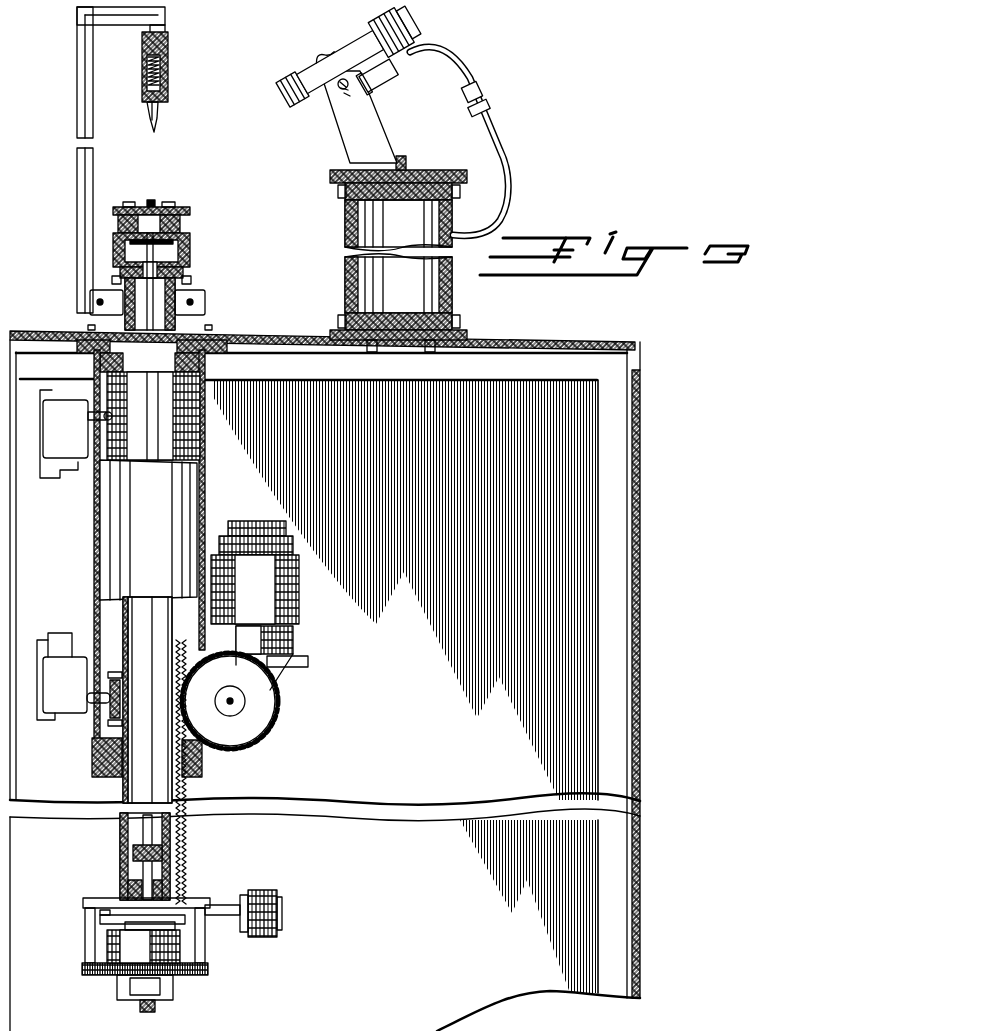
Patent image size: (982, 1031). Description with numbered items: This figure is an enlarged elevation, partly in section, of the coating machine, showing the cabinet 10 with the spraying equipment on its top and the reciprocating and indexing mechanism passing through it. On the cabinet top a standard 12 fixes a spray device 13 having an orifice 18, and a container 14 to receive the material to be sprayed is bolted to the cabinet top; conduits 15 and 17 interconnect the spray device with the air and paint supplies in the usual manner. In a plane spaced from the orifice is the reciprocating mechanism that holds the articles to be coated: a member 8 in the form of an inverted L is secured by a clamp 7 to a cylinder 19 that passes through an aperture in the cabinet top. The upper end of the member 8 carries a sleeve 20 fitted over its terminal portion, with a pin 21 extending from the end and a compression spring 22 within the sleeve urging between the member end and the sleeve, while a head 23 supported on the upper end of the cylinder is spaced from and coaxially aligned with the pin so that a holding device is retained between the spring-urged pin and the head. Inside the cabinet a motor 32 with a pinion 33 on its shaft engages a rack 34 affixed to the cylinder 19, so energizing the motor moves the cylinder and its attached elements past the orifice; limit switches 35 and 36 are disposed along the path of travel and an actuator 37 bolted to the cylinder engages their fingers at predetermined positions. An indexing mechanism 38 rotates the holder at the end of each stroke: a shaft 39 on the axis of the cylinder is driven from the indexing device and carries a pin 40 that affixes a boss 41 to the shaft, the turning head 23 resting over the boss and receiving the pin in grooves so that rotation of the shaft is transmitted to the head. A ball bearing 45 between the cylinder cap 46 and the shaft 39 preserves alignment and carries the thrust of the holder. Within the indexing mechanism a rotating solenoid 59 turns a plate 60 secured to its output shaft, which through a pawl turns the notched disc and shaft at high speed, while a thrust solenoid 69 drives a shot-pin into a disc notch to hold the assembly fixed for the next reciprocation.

The clamp 7 is at (205, 302).
The member 8 is at (78, 173).
The cabinet 10 is at (641, 360).
The standard 12 is at (345, 233).
The spray device 13 is at (362, 24).
The container 14 is at (400, 302).
The conduit 15 is at (333, 130).
The conduit 17 is at (494, 130).
The orifice 18 is at (272, 98).
The cylinder 19 is at (148, 418).
The sleeve 20 is at (172, 86).
The pin 21 is at (149, 124).
The compression spring 22 is at (150, 72).
The head 23 is at (152, 204).
The motor 32 is at (299, 608).
The pinion 33 is at (264, 738).
The rack 34 is at (187, 856).
The limit switch 35 is at (68, 634).
The limit switch 36 is at (62, 480).
The actuator 37 is at (100, 710).
The indexing mechanism 38 is at (222, 962).
The shaft 39 is at (138, 652).
The pin 40 is at (184, 228).
The boss 41 is at (126, 236).
The ball bearing 45 is at (183, 272).
The cylinder cap 46 is at (116, 280).
The rotating solenoid 59 is at (107, 947).
The plate 60 is at (100, 920).
The solenoid 69 is at (258, 890).